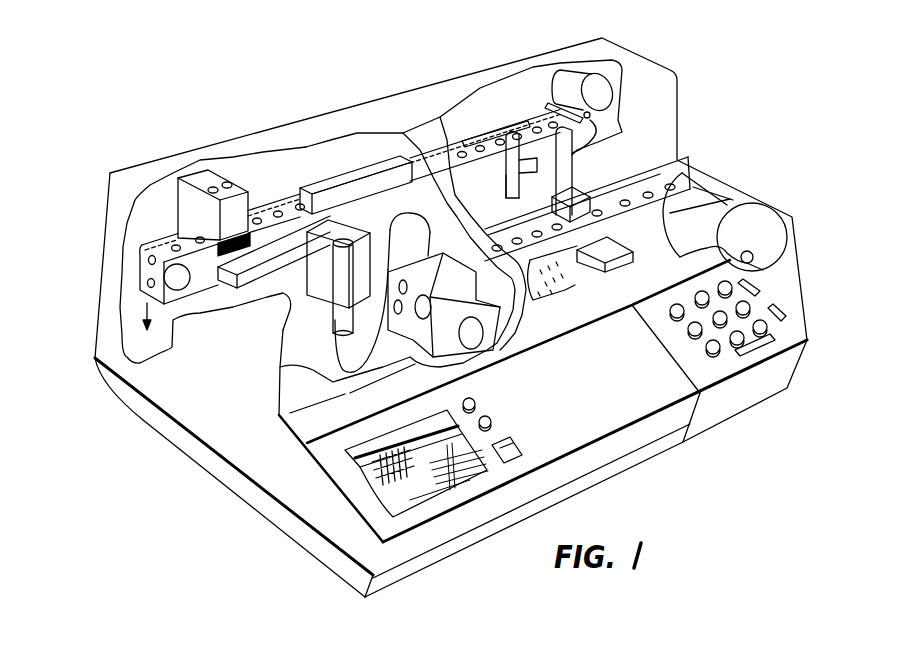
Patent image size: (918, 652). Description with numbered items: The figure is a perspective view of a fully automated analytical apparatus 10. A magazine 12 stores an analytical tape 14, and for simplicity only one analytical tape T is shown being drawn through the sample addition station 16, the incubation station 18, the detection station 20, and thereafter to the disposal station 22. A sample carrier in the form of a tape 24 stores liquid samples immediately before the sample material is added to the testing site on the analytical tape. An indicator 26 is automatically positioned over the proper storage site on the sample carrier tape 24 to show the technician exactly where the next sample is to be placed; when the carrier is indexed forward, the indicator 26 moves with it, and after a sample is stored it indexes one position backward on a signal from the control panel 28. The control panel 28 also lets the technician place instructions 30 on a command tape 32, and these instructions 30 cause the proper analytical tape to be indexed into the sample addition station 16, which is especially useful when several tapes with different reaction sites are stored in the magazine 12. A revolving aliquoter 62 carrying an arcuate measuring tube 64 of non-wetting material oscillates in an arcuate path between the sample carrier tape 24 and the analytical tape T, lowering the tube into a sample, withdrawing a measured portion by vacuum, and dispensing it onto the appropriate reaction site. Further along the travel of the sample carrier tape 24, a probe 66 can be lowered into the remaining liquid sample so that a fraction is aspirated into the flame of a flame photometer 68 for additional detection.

The automatic analytical apparatus 10 is at (97, 271).
The magazine 12 is at (592, 76).
The analytical tape 14 is at (595, 132).
The sample addition station 16 is at (514, 145).
The incubation station 18 is at (342, 186).
The detection station 20 is at (200, 180).
The disposal station 22 is at (140, 325).
The sample carrier tape 24 is at (667, 185).
The indicator 26 is at (570, 198).
The control panel 28 is at (788, 333).
The instructions 30 is at (561, 292).
The command tape 32 is at (723, 213).
The revolving aliquoter 62 is at (510, 182).
The arcuate measuring tube 64 is at (500, 137).
The probe 66 is at (428, 250).
The flame photometer 68 is at (312, 297).
The analytical tape T is at (283, 200).